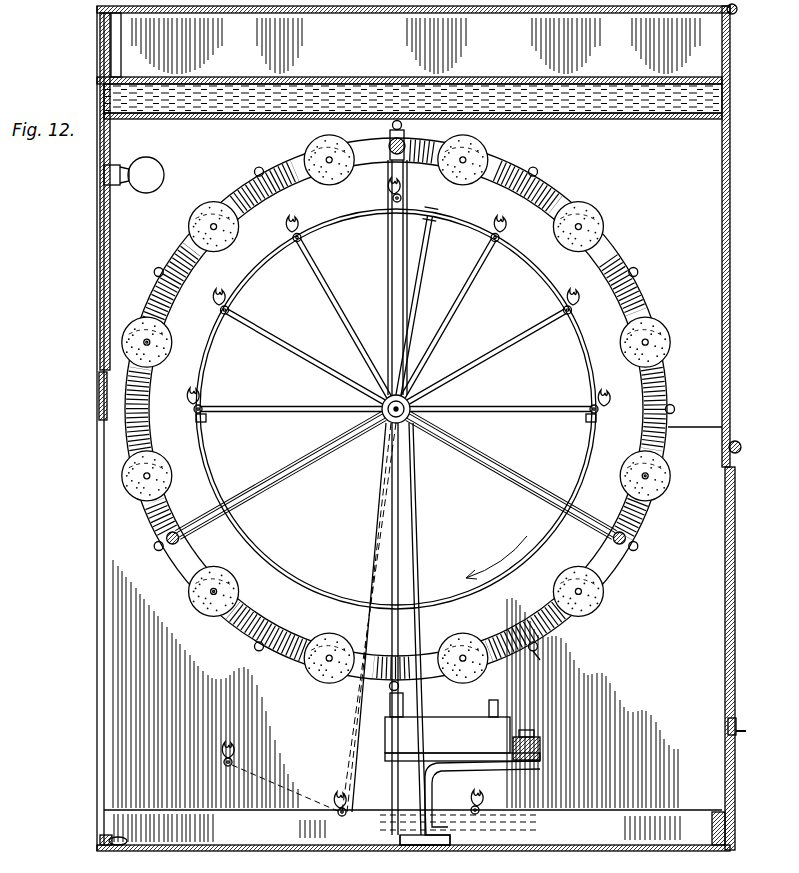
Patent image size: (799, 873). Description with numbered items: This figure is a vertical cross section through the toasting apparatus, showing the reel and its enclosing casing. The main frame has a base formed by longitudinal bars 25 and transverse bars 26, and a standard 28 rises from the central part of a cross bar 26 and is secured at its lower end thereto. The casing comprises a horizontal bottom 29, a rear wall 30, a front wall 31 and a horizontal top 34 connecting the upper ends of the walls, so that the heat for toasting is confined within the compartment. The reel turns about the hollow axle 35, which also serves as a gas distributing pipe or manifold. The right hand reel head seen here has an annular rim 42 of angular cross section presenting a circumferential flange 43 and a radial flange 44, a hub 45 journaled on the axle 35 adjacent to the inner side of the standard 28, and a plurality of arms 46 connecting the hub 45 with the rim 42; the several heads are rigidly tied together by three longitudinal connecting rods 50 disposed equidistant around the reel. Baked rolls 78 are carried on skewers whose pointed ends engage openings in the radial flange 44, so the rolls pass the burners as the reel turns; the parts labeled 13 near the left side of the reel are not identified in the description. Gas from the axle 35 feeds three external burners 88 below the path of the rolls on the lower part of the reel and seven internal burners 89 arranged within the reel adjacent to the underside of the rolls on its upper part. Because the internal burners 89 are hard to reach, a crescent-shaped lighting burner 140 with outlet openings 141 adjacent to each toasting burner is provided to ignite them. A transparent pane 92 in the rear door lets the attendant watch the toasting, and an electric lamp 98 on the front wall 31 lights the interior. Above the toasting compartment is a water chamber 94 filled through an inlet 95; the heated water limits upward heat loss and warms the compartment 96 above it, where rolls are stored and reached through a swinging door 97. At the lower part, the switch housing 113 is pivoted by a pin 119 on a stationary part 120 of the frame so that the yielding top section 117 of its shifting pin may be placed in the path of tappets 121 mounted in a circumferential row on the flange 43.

The lamp 13 is at (396, 468).
The longitudinal bars 25 is at (118, 846).
The transverse bars 26 is at (414, 827).
The standard 28 is at (412, 580).
The horizontal bottom 29 is at (576, 851).
The rear wall 30 is at (736, 722).
The front wall 31 is at (99, 742).
The horizontal top 34 is at (668, 116).
The axle 35 is at (386, 432).
The annular rim 42 is at (612, 256).
The circumferential flange 43 is at (549, 651).
The radial flange 44 is at (534, 608).
The hub 45 is at (468, 415).
The arms 46 is at (286, 482).
The longitudinal connecting rods 50 is at (390, 152).
The baked rolls 78 is at (192, 218).
The external burners 88 is at (342, 806).
The internal burners 89 is at (510, 240).
The transparent pane 92 is at (736, 622).
The water chamber 94 is at (578, 108).
The inlet 95 is at (112, 26).
The warming compartment 96 is at (590, 78).
The swinging door 97 is at (731, 62).
The electric lamp 98 is at (160, 169).
The switch housing 113 is at (452, 722).
The yielding top section 117 is at (390, 704).
The pin 119 is at (524, 738).
The stationary part 120 is at (494, 764).
The tappets 121 is at (540, 165).
The lighting burner 140 is at (334, 216).
The outlet openings 141 is at (288, 250).